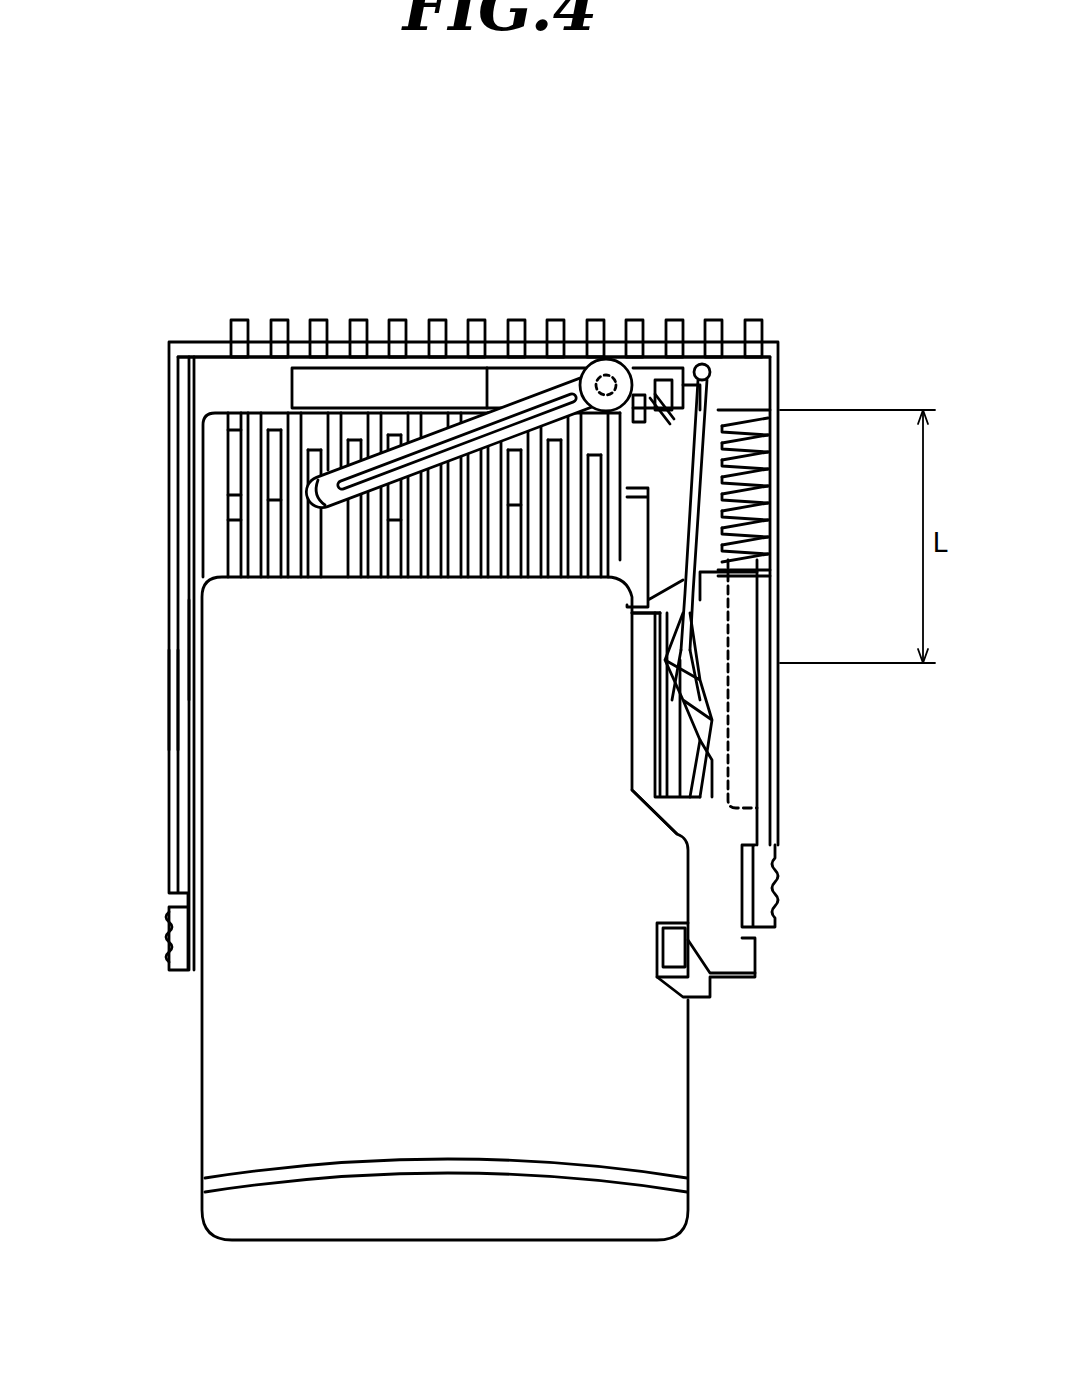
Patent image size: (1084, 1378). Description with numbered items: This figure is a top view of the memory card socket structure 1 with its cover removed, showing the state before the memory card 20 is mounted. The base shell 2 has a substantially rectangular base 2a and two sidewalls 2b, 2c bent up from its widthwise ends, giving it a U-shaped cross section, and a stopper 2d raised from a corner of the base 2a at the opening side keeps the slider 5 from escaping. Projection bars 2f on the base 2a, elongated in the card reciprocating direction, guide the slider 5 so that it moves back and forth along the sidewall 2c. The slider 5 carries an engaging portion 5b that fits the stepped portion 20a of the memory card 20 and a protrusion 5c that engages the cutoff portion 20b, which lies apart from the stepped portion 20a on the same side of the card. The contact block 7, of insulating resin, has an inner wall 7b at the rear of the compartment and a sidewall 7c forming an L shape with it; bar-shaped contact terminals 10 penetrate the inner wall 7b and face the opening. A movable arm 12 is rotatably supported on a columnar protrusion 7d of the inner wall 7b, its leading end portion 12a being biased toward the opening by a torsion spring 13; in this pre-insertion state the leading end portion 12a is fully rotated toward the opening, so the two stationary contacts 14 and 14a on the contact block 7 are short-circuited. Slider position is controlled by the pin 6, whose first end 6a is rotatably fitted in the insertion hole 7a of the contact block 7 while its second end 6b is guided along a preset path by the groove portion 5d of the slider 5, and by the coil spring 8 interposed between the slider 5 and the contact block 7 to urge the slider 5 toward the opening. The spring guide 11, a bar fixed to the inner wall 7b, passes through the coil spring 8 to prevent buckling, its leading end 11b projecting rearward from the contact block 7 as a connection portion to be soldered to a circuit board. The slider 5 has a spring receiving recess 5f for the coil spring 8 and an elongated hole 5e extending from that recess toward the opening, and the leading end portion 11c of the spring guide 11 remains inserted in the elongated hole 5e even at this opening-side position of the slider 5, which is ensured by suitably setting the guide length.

The memory card socket structure 1 is at (580, 202).
The base shell 2 is at (168, 755).
The base 2a is at (215, 497).
The sidewall 2b is at (178, 697).
The sidewall 2c is at (778, 742).
The stopper 2d is at (728, 996).
The projection bar 2f is at (637, 560).
The slider 5 is at (760, 830).
The engaging portion 5b is at (652, 812).
The protrusion 5c is at (665, 950).
The groove portion 5d is at (706, 690).
The elongated hole 5e is at (745, 775).
The spring receiving recess 5f is at (745, 572).
The pin 6 is at (700, 582).
The first end 6a is at (720, 378).
The second end 6b is at (700, 636).
The contact block 7 is at (760, 342).
The insertion hole 7a is at (686, 398).
The inner wall 7b is at (215, 383).
The sidewall 7c is at (195, 612).
The columnar protrusion 7d is at (592, 322).
The coil spring 8 is at (772, 442).
The contact terminals 10 is at (320, 318).
The spring guide 11 is at (752, 540).
The leading end 11b is at (724, 322).
The leading end portion 11c is at (748, 682).
The movable arm 12 is at (524, 394).
The leading end portion 12a is at (327, 518).
The torsion spring 13 is at (760, 495).
The stationary contact 14 is at (672, 322).
The stationary contact 14a is at (627, 322).
The memory card 20 is at (572, 1243).
The stepped portion 20a is at (680, 846).
The cutoff portion 20b is at (700, 975).